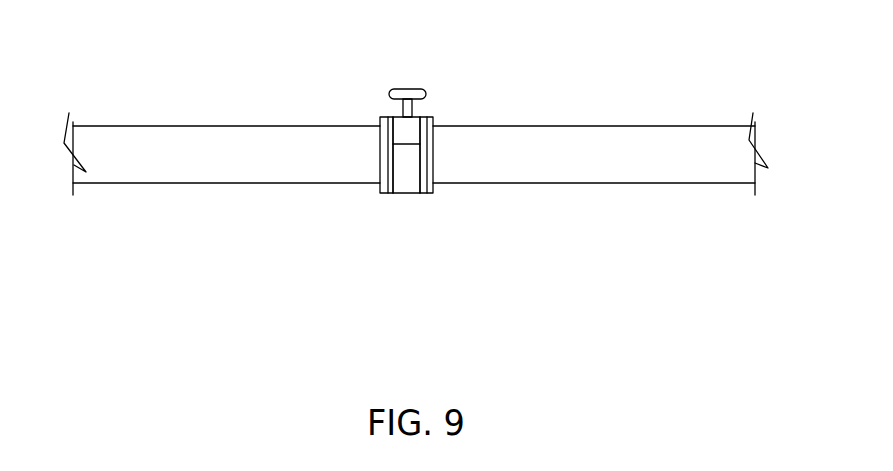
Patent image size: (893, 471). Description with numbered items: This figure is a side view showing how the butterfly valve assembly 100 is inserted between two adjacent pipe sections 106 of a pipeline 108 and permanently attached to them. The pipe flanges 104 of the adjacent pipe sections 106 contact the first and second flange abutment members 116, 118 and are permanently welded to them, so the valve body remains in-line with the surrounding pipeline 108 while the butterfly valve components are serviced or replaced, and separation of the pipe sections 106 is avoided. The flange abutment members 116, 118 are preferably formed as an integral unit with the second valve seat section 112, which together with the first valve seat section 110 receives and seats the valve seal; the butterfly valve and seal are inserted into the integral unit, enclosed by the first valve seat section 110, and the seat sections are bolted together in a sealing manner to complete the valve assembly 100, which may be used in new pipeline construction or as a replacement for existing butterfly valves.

The valve assembly 100 is at (408, 139).
The pipe flanges 104 is at (381, 118).
The pipe sections 106 is at (252, 169).
The pipeline 108 is at (416, 139).
The first valve seat section 110 is at (412, 125).
The second valve seat section 112 is at (406, 194).
The first flange abutment member 116 is at (415, 194).
The second flange abutment member 118 is at (396, 194).